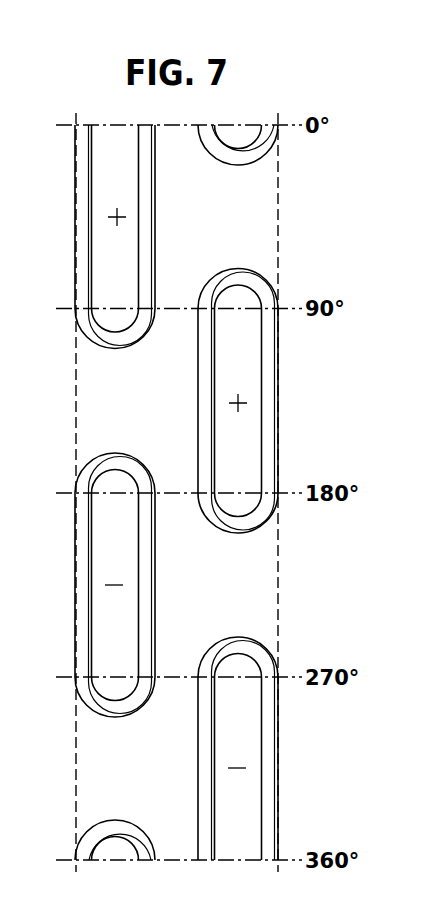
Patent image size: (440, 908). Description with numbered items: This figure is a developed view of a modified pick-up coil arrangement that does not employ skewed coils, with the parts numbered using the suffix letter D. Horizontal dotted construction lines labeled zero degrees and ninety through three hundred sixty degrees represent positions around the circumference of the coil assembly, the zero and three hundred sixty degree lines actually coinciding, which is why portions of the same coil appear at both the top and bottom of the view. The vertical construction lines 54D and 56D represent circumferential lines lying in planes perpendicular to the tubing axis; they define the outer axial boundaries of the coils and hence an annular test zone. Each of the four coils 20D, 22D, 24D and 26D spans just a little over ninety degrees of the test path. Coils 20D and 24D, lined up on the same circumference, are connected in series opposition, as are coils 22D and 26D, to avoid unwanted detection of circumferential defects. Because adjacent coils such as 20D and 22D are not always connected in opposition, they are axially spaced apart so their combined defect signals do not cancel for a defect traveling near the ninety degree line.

The pick-up coil 20D is at (79, 187).
The pick-up coil 22D is at (272, 372).
The pick-up coil 24D is at (80, 576).
The pick-up coil 26D is at (263, 148).
The vertical construction line 54D is at (76, 390).
The vertical construction line 56D is at (278, 201).